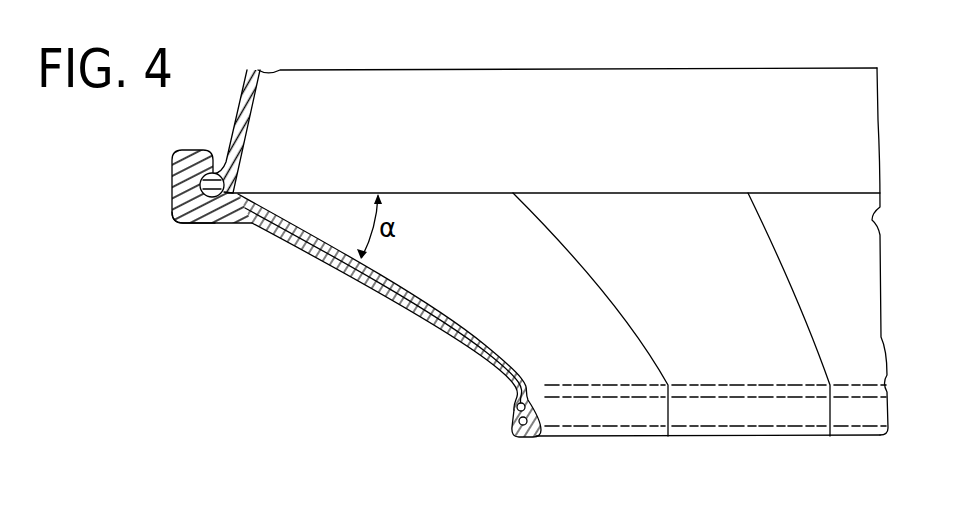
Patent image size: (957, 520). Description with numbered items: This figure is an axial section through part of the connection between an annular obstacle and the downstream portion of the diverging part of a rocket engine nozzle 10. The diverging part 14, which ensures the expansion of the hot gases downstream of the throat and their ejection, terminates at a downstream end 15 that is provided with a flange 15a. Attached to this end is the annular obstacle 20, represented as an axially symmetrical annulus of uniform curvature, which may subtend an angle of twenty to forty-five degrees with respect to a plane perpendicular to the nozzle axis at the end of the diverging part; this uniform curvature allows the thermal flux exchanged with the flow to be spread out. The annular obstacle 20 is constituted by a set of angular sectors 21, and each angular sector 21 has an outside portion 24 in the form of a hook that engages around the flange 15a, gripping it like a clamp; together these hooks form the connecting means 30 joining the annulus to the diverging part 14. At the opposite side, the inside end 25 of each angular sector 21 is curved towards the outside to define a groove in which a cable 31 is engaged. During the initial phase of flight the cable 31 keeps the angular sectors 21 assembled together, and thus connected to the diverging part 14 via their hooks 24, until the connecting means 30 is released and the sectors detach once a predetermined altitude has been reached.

The nozzle 10 is at (239, 94).
The diverging part 14 is at (768, 86).
The downstream end 15 is at (668, 191).
The flange 15a is at (229, 186).
The annular obstacle 20 is at (466, 230).
The angular sector 21 is at (731, 208).
The outside portion 24 is at (196, 222).
The inside end 25 is at (782, 408).
The connecting means 30 is at (171, 196).
The cable 31 is at (517, 413).